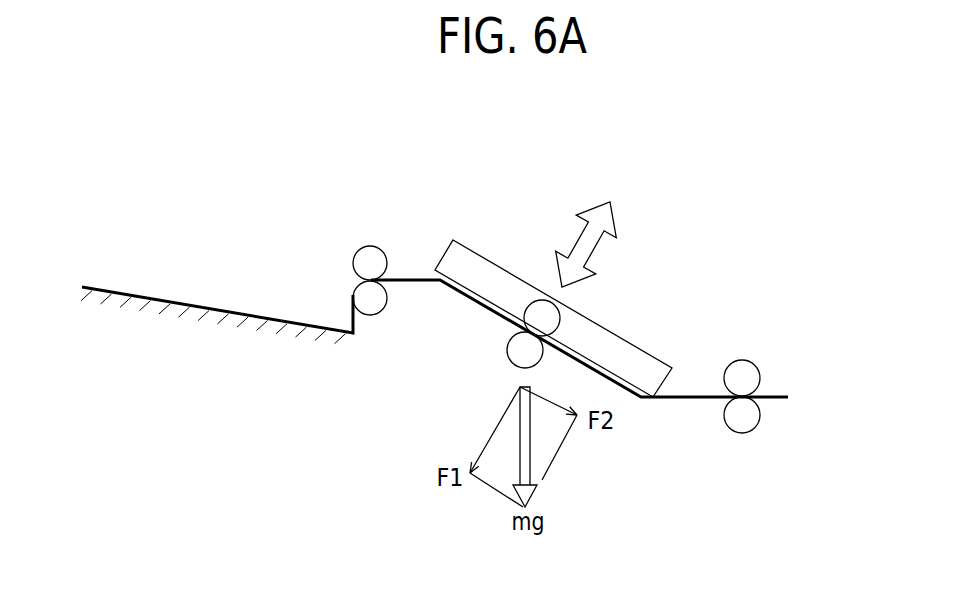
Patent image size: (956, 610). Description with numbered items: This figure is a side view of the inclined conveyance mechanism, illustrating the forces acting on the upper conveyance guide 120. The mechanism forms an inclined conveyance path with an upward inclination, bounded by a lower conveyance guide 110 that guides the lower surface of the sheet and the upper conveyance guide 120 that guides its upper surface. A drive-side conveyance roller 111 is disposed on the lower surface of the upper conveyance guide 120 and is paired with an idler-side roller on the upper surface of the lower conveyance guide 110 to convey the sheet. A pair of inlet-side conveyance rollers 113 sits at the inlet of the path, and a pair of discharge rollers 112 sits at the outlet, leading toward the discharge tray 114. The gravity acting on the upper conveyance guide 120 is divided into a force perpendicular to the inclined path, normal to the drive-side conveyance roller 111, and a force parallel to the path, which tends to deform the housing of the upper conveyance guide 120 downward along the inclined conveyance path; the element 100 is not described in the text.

The sheet conveying device 100 is at (280, 173).
The lower conveyance guide 110 is at (470, 290).
The drive-side conveyance roller 111 is at (538, 310).
The pair of discharge rollers 112 is at (372, 256).
The pair of inlet-side conveyance rollers 113 is at (742, 373).
The discharge tray 114 is at (227, 311).
The upper conveyance guide 120 is at (618, 348).